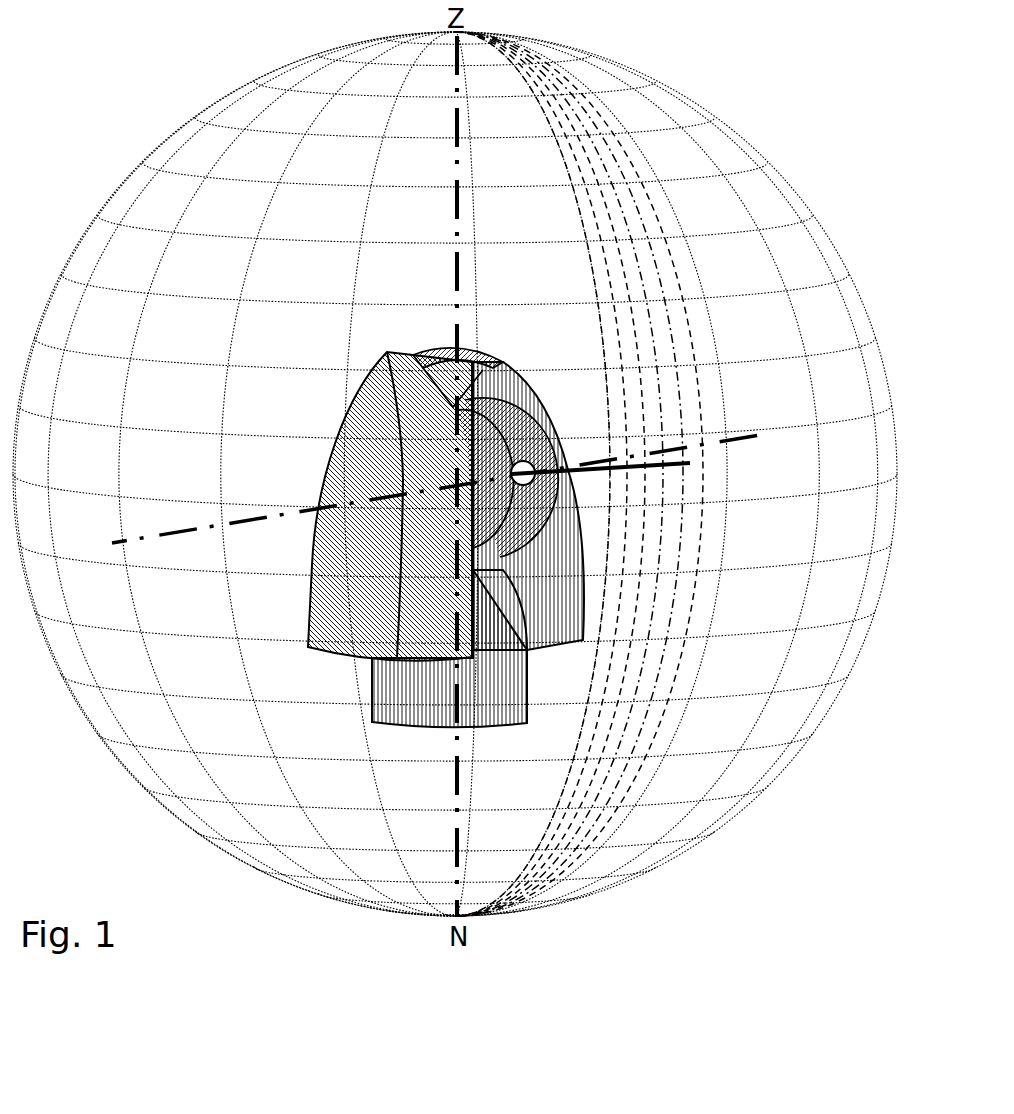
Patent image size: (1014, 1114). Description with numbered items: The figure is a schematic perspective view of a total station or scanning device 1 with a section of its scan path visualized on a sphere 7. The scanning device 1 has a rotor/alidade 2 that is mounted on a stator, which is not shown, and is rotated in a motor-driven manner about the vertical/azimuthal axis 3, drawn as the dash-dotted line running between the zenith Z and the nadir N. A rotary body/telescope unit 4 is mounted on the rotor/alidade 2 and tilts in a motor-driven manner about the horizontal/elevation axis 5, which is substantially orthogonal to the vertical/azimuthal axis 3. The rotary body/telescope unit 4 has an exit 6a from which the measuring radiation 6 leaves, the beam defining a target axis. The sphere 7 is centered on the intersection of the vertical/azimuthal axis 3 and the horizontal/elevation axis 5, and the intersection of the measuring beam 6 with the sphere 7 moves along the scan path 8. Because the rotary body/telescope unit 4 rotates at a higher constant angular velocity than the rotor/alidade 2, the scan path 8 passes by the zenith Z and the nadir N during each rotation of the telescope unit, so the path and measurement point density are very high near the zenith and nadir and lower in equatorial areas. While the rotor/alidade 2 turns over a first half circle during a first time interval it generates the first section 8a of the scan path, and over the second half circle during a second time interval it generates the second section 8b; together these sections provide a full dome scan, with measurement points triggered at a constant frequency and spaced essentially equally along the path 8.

The total station or scanning device 1 is at (388, 512).
The rotor/alidade 2 is at (310, 575).
The vertical/azimuthal axis 3 is at (453, 215).
The rotary body/telescope unit 4 is at (452, 400).
The horizontal/elevation axis 5 is at (252, 513).
The measuring radiation 6 is at (683, 462).
The exit 6a is at (543, 465).
The sphere 7 is at (857, 657).
The scan path 8 is at (606, 474).
The first section of the scan path 8a is at (643, 288).
The second section of the scan path 8b is at (623, 313).